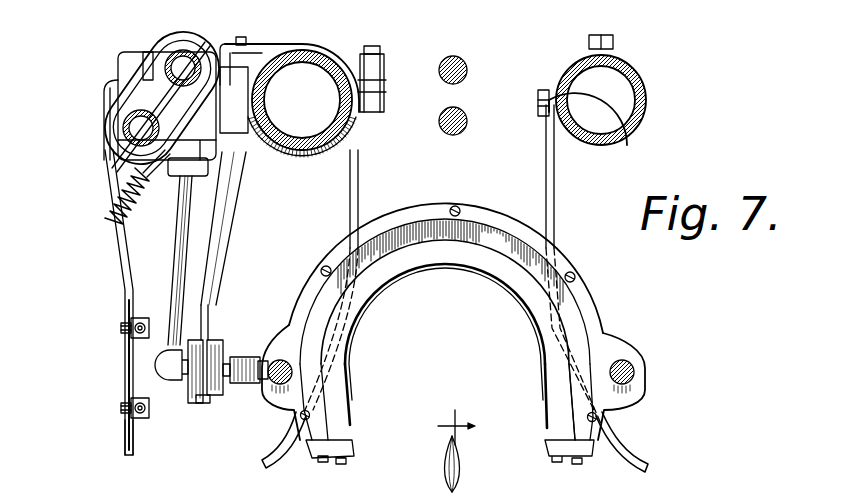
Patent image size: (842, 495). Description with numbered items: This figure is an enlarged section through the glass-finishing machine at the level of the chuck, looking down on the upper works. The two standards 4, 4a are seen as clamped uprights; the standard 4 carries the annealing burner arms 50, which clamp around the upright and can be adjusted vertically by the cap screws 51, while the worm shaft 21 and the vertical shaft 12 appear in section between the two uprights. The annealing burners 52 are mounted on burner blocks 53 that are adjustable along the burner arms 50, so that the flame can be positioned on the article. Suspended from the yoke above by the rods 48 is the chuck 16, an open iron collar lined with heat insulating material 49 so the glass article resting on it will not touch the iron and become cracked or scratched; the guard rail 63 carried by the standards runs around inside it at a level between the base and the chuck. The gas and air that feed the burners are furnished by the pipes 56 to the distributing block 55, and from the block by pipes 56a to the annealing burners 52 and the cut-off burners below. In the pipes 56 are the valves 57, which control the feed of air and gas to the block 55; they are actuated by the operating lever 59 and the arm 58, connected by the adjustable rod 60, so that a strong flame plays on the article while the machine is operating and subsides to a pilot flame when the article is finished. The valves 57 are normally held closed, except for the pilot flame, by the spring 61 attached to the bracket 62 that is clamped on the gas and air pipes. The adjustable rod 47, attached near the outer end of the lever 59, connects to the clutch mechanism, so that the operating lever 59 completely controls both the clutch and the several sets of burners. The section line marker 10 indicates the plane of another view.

The standard 4 is at (320, 155).
The standard 4a is at (648, 116).
The section indicator 10 is at (456, 440).
The vertical shaft 12 is at (455, 136).
The chuck 16 is at (598, 334).
The worm shaft 21 is at (467, 68).
The adjustable rod 47 is at (127, 401).
The rods 48 is at (278, 386).
The heat insulating material 49 is at (558, 413).
The annealing burner arms 50 is at (236, 233).
The cap screws 51 is at (385, 56).
The annealing burners 52 is at (248, 357).
The burner blocks 53 is at (197, 402).
The distributing block 55 is at (136, 60).
The pipes 56 is at (199, 58).
The pipes 56a is at (172, 276).
The valves 57 is at (178, 46).
The arm 58 is at (124, 298).
The operating lever 59 is at (124, 437).
The adjustable rod 60 is at (127, 329).
The spring 61 is at (106, 216).
The bracket 62 is at (130, 199).
The guard rail 63 is at (444, 270).